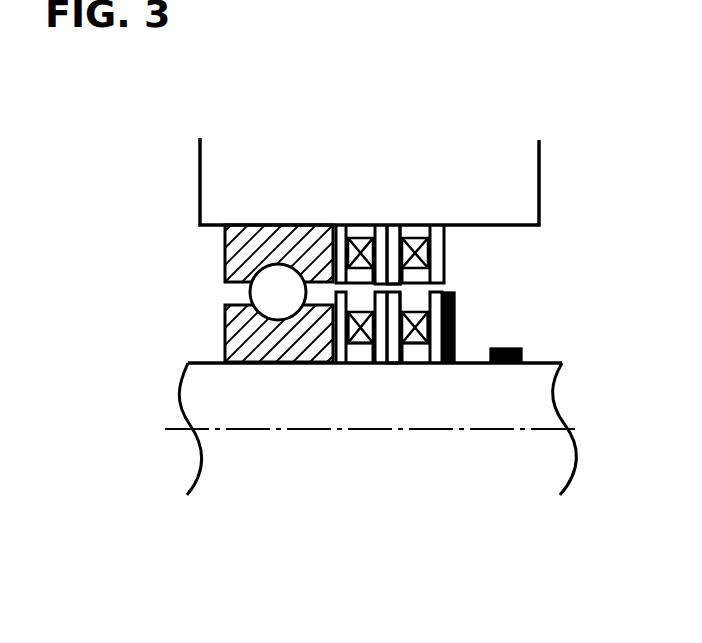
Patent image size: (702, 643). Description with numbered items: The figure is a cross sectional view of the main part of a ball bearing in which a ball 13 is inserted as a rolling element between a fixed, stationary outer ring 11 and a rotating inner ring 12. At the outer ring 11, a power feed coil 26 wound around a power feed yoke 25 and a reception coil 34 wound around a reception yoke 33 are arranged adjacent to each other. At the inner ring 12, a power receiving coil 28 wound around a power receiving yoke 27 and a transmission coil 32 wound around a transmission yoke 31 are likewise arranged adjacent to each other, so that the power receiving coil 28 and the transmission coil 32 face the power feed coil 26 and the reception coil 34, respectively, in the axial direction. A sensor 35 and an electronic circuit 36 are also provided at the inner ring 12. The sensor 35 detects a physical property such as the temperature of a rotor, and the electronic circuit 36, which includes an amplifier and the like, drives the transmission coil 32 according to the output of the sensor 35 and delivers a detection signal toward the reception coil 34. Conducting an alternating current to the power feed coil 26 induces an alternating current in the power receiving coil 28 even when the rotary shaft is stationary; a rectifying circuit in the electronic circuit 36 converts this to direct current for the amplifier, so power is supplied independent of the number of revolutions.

The outer ring 11 is at (240, 253).
The inner ring 12 is at (240, 335).
The ball 13 is at (263, 295).
The power feed yoke 25 is at (380, 242).
The power feed coil 26 is at (360, 242).
The power receiving yoke 27 is at (380, 345).
The power receiving coil 28 is at (358, 343).
The transmission yoke 31 is at (395, 345).
The transmission coil 32 is at (412, 343).
The reception yoke 33 is at (398, 242).
The reception coil 34 is at (418, 242).
The sensor 35 is at (512, 348).
The electronic circuit 36 is at (458, 298).